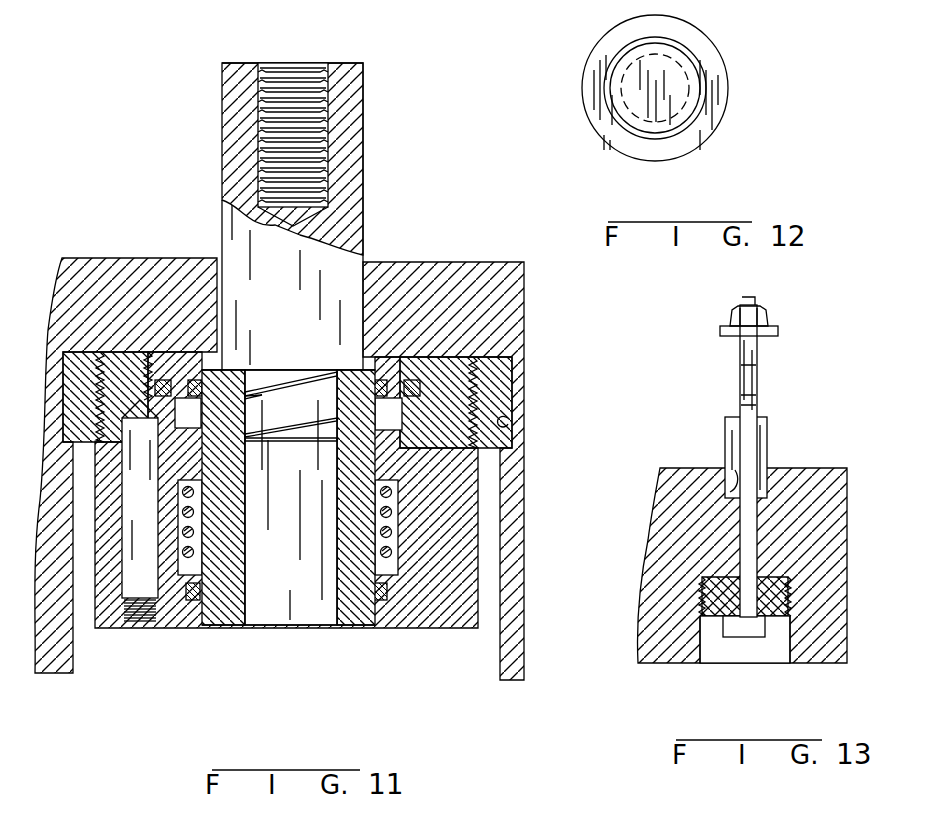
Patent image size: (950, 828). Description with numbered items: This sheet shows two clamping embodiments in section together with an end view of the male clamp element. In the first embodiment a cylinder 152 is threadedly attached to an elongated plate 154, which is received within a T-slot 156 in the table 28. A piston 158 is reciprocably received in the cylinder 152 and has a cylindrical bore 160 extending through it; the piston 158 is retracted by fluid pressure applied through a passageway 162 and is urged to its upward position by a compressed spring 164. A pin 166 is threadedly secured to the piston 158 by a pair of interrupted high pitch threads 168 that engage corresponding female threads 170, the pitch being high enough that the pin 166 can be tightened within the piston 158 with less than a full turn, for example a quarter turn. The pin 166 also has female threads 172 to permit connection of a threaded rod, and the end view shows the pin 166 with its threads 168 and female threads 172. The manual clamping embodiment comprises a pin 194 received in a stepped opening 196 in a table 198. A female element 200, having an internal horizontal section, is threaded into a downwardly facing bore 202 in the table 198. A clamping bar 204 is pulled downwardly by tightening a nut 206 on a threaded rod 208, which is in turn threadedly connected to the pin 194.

In FIG. 11, the table 28 is at (445, 265).
In FIG. 11, the cylinder 152 is at (472, 505).
In FIG. 11, the elongated plate 154 is at (505, 382).
In FIG. 11, the T-slot 156 is at (508, 422).
In FIG. 11, the piston 158 is at (340, 585).
In FIG. 11, the cylindrical bore 160 is at (306, 564).
In FIG. 11, the passageway 162 is at (158, 418).
In FIG. 11, the compressed spring 164 is at (200, 556).
In FIG. 11, the pin 166 is at (322, 194).
In FIG. 12, the pin 166 is at (703, 48).
In FIG. 11, the interrupted high pitch threads 168 is at (270, 392).
In FIG. 12, the interrupted high pitch threads 168 is at (620, 125).
In FIG. 11, the female threads 170 is at (246, 394).
In FIG. 11, the female threads 172 is at (300, 92).
In FIG. 12, the female threads 172 is at (630, 60).
In FIG. 13, the pin 194 is at (766, 458).
In FIG. 13, the stepped opening 196 is at (735, 470).
In FIG. 13, the table 198 is at (682, 481).
In FIG. 13, the female element 200 is at (718, 612).
In FIG. 13, the downwardly facing bore 202 is at (788, 637).
In FIG. 13, the clamping bar 204 is at (722, 332).
In FIG. 13, the nut 206 is at (768, 316).
In FIG. 13, the threaded rod 208 is at (758, 376).